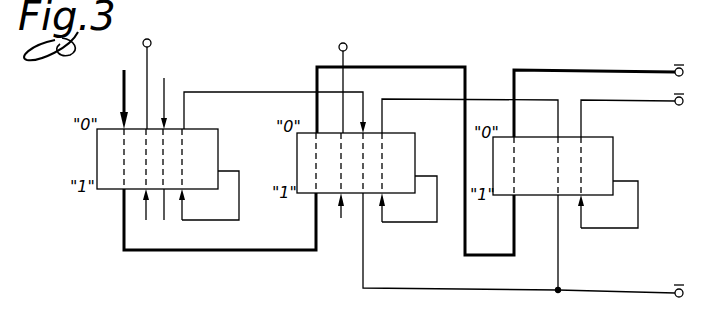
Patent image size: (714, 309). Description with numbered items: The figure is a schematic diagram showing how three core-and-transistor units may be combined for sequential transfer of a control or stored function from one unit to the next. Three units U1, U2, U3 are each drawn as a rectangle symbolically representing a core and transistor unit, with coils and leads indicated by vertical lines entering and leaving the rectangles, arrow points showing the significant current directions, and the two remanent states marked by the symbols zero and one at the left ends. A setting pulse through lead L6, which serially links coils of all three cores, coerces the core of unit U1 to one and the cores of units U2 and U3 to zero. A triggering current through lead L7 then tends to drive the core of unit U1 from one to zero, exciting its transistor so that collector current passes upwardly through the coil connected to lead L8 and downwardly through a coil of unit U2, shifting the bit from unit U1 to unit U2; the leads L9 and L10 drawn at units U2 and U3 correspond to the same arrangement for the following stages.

The first unit U1 is at (156, 167).
The second unit U2 is at (358, 172).
The third unit U3 is at (552, 175).
The lead L6 is at (124, 92).
The lead L7 is at (146, 220).
The lead L8 is at (233, 220).
The line L9 is at (340, 219).
The feedback line L10 is at (394, 223).